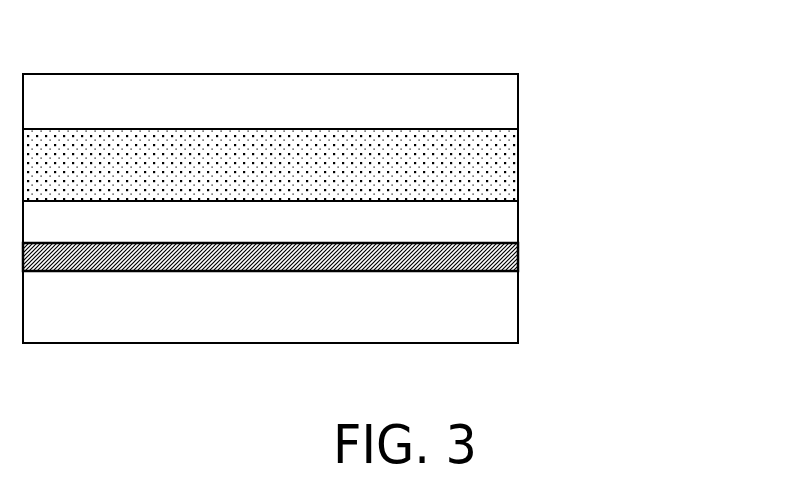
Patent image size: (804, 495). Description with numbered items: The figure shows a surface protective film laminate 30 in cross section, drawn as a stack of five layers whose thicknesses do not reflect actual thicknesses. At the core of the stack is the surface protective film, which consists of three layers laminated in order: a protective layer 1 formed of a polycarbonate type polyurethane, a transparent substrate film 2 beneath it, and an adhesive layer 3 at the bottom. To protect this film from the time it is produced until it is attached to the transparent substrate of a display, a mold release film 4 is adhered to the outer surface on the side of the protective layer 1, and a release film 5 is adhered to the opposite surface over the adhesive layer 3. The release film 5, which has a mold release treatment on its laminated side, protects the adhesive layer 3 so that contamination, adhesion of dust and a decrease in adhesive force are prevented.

The surface protective film laminate 30 is at (529, 28).
The mold release film 4 is at (498, 98).
The protective layer 1 is at (498, 150).
The transparent substrate film 2 is at (498, 217).
The adhesive layer 3 is at (506, 264).
The release film 5 is at (498, 320).